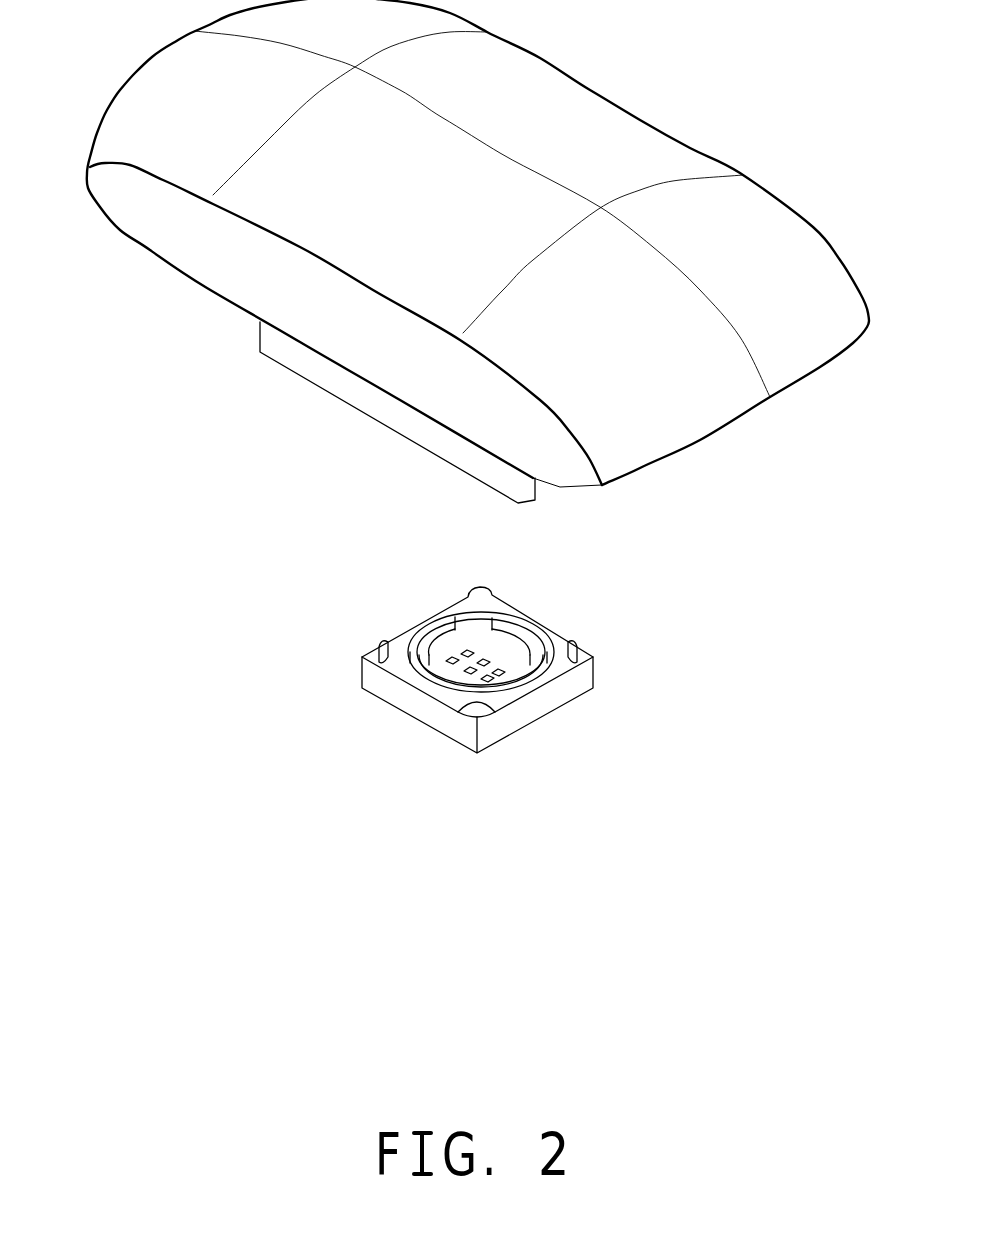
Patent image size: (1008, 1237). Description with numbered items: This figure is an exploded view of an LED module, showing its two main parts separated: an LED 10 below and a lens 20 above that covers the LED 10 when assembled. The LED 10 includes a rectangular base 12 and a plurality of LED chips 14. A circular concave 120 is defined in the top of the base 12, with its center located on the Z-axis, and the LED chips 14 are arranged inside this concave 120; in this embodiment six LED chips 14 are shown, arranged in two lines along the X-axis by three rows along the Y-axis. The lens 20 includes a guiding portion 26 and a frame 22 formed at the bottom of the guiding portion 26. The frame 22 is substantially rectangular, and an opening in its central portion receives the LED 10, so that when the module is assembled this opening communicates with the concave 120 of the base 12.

The LED 10 is at (578, 625).
The base 12 is at (583, 678).
The LED chips 14 is at (487, 662).
The concave 120 is at (477, 623).
The lens 20 is at (464, 251).
The frame 22 is at (317, 368).
The guiding portion 26 is at (273, 197).